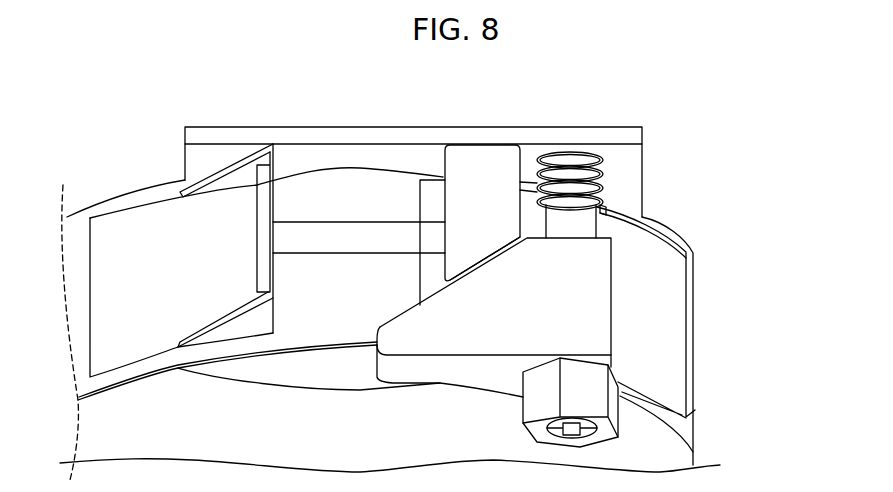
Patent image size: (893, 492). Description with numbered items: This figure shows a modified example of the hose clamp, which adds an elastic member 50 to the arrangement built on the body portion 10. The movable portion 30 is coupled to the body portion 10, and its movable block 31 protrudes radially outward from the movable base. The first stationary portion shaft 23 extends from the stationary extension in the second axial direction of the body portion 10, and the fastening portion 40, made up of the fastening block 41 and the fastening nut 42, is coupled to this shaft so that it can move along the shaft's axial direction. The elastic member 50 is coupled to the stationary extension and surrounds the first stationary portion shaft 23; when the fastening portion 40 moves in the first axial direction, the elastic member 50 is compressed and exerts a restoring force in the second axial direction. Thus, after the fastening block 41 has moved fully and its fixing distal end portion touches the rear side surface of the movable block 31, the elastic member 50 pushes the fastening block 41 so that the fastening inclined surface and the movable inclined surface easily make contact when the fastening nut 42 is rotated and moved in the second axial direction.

The body portion 10 is at (246, 372).
The first stationary portion shaft 23 is at (583, 225).
The movable portion 30 is at (712, 360).
The movable block 31 is at (488, 163).
The fastening portion 40 is at (622, 342).
The fastening block 41 is at (600, 298).
The fastening nut 42 is at (614, 404).
The elastic member 50 is at (605, 165).